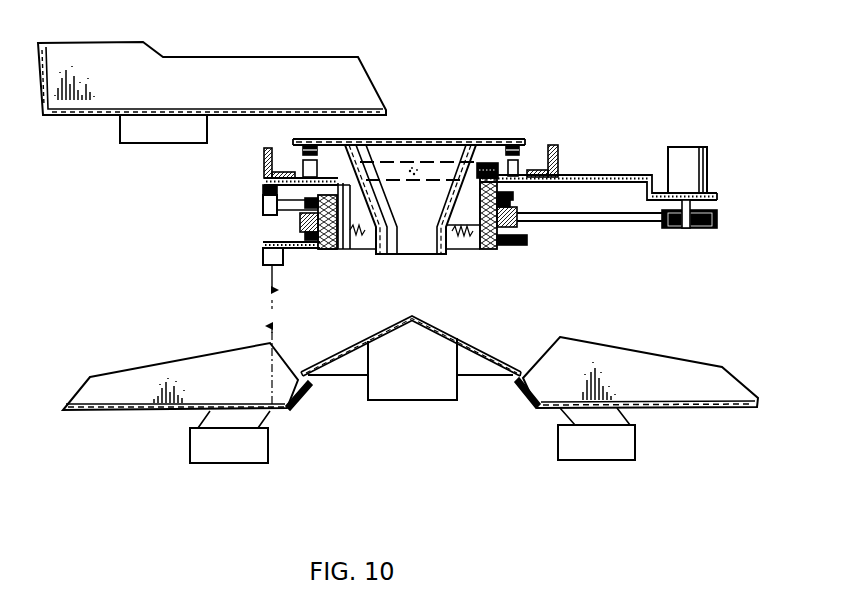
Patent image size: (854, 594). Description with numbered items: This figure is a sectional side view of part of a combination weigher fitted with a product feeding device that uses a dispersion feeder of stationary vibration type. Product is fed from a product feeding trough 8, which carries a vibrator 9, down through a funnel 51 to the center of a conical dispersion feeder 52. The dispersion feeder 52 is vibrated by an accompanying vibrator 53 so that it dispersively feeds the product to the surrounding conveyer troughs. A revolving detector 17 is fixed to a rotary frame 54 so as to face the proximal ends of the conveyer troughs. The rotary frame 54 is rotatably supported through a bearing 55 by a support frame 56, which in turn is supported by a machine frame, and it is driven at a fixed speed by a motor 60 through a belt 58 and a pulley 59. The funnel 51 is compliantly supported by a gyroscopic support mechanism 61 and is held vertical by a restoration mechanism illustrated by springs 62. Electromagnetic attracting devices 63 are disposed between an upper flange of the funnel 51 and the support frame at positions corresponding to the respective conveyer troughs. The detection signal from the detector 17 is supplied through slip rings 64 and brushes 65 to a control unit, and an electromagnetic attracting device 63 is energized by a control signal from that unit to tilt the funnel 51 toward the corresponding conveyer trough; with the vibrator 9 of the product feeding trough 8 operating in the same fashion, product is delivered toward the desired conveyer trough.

The product feeding trough 8 is at (266, 56).
The vibrator 9 is at (130, 146).
The detector 17 is at (262, 255).
The funnel 51 is at (455, 143).
The dispersion feeder 52 is at (484, 350).
The vibrator 53 is at (408, 402).
The rotary frame 54 is at (299, 250).
The bearing 55 is at (332, 252).
The support frame 56 is at (450, 252).
The belt 58 is at (615, 223).
The pulley 59 is at (703, 230).
The motor 60 is at (708, 158).
The gyroscopic support mechanism 61 is at (417, 157).
The restoration mechanism 62 is at (477, 251).
The electromagnetic attracting device 63 is at (522, 157).
The slip ring 64 is at (515, 202).
The brush 65 is at (262, 203).